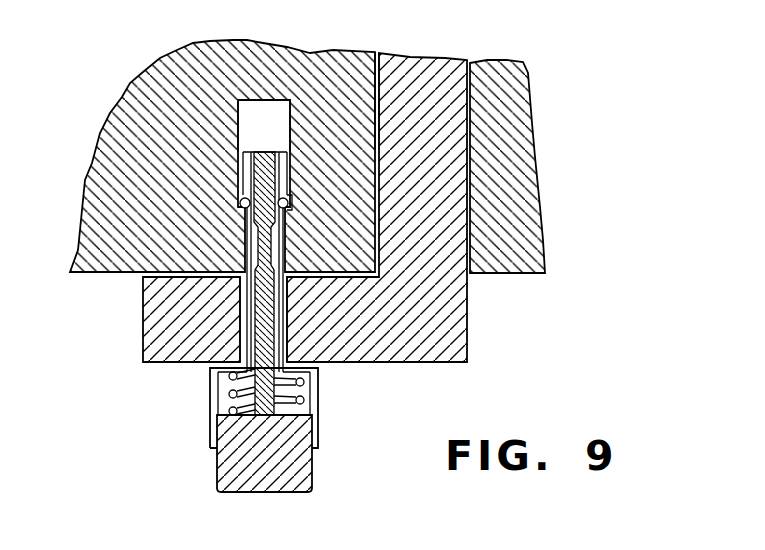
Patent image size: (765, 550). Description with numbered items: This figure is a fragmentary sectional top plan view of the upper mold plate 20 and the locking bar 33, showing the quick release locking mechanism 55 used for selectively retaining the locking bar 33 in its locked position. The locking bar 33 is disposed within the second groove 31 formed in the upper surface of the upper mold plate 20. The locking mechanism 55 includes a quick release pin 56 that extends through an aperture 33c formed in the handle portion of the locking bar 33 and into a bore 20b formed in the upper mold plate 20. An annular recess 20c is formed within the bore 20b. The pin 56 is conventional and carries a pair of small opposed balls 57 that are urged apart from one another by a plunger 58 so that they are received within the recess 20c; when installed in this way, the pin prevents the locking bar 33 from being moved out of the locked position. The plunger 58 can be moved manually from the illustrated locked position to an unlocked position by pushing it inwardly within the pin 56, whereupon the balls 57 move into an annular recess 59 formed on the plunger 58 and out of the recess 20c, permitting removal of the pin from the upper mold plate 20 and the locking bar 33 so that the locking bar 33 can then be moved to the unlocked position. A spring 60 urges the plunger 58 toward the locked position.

The upper mold plate 20 is at (530, 200).
The bore 20b is at (240, 114).
The annular recess 20c is at (288, 204).
The second groove 31 is at (383, 84).
The second locking bar 33 is at (453, 337).
The aperture 33c is at (243, 323).
The locking mechanism 55 is at (164, 455).
The quick release pin 56 is at (320, 410).
The balls 57 is at (238, 203).
The plunger 58 is at (312, 470).
The annular recess 59 is at (245, 245).
The spring 60 is at (230, 394).